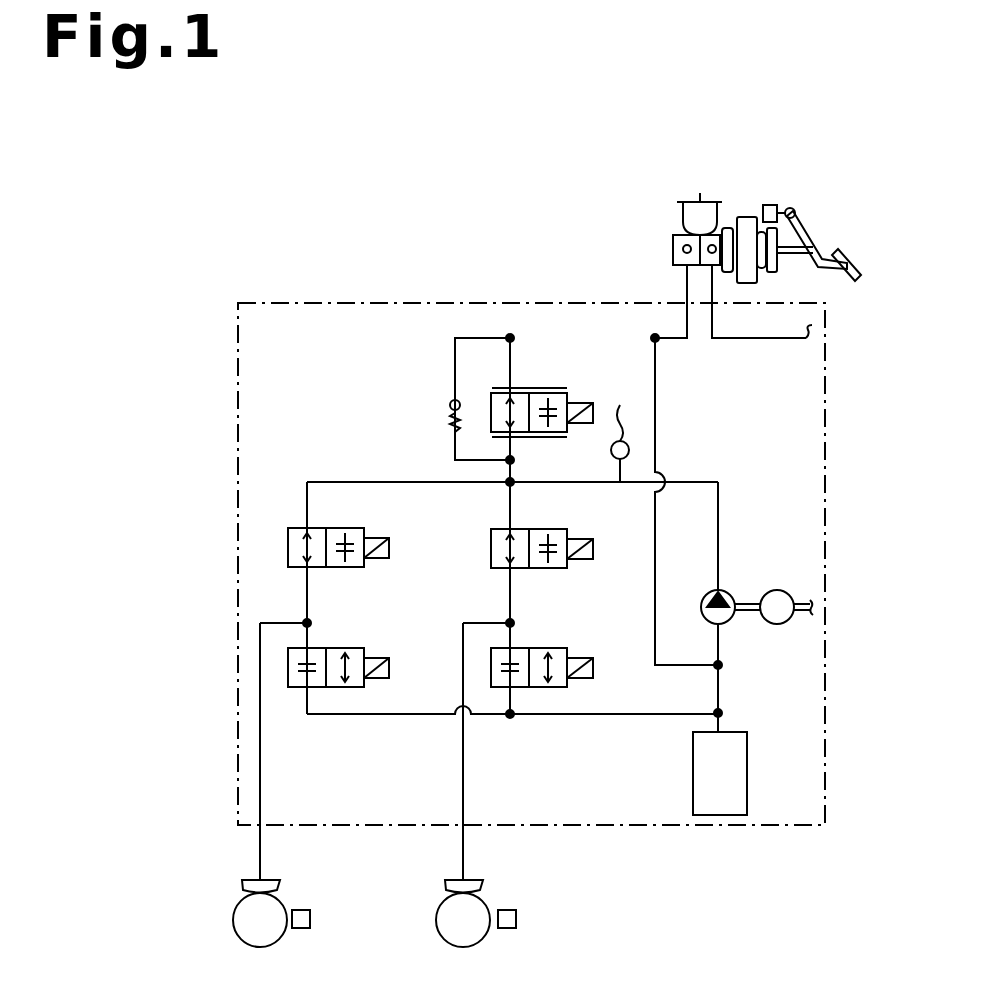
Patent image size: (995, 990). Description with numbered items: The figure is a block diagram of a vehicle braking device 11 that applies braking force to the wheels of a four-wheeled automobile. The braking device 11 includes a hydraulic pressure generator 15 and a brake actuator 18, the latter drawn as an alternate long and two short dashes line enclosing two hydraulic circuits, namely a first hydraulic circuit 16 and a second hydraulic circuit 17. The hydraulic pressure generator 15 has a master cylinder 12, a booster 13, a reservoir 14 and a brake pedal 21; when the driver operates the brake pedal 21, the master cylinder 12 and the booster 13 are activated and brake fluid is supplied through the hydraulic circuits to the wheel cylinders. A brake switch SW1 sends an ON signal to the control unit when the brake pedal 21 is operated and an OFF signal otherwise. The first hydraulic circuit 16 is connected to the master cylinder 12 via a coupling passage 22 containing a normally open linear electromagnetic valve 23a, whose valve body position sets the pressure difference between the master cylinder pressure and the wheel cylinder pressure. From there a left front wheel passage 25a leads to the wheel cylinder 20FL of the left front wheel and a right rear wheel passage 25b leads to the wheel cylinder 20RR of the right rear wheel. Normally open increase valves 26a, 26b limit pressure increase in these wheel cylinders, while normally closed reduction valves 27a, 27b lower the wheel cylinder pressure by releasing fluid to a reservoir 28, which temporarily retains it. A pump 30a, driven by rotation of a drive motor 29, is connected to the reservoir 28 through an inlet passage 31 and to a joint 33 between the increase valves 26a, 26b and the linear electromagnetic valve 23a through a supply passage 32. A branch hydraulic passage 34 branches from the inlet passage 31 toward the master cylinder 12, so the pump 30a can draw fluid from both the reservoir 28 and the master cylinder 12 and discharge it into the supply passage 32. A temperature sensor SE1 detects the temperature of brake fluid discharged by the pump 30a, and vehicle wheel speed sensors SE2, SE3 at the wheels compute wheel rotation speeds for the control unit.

The braking device 11 is at (310, 195).
The master cylinder 12 is at (676, 230).
The booster 13 is at (746, 224).
The reservoir 14 is at (685, 201).
The hydraulic pressure generator 15 is at (657, 202).
The first hydraulic circuit 16 is at (433, 455).
The second hydraulic circuit 17 is at (787, 340).
The brake actuator 18 is at (330, 303).
The wheel cylinder of the right rear wheel 20RR is at (272, 882).
The wheel cylinder of the left front wheel 20FL is at (474, 882).
The brake pedal 21 is at (844, 278).
The coupling passage 22 is at (670, 341).
The linear electromagnetic valve 23a is at (476, 320).
The left front wheel passage 25a is at (508, 508).
The right rear wheel passage 25b is at (305, 492).
The increase valve 26a is at (556, 528).
The increase valve 26b is at (332, 527).
The reduction valve 27a is at (557, 648).
The reduction valve 27b is at (349, 647).
The reservoir 28 is at (693, 785).
The drive motor 29 is at (778, 590).
The pump 30a is at (708, 597).
The inlet passage 31 is at (722, 651).
The supply passage 32 is at (720, 500).
The joint 33 is at (516, 481).
The branch hydraulic passage 34 is at (660, 598).
The brake switch SW1 is at (769, 205).
The temperature sensor SE1 is at (625, 423).
The vehicle wheel speed sensor SE2 is at (505, 930).
The vehicle wheel speed sensor SE3 is at (300, 930).